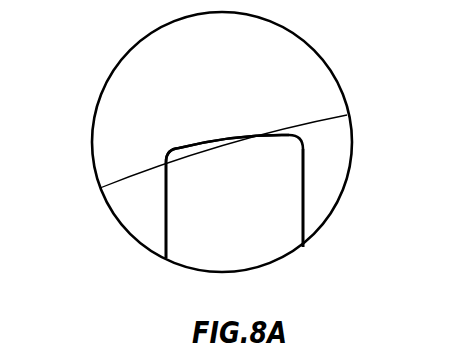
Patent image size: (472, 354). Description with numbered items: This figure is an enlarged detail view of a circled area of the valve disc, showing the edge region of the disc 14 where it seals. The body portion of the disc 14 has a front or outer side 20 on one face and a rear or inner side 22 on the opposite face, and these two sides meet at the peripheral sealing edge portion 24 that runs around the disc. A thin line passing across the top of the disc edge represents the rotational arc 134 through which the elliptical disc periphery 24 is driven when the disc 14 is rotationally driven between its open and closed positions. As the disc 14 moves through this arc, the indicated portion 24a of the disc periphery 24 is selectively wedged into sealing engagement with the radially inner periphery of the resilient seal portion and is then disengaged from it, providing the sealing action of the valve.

The disc 14 is at (265, 237).
The front or outer side 20 is at (166, 218).
The rear or inner side 22 is at (303, 188).
The peripheral sealing edge portion 24 is at (263, 137).
The portion of disc periphery 24a is at (183, 148).
The rotational arc 134 is at (131, 172).